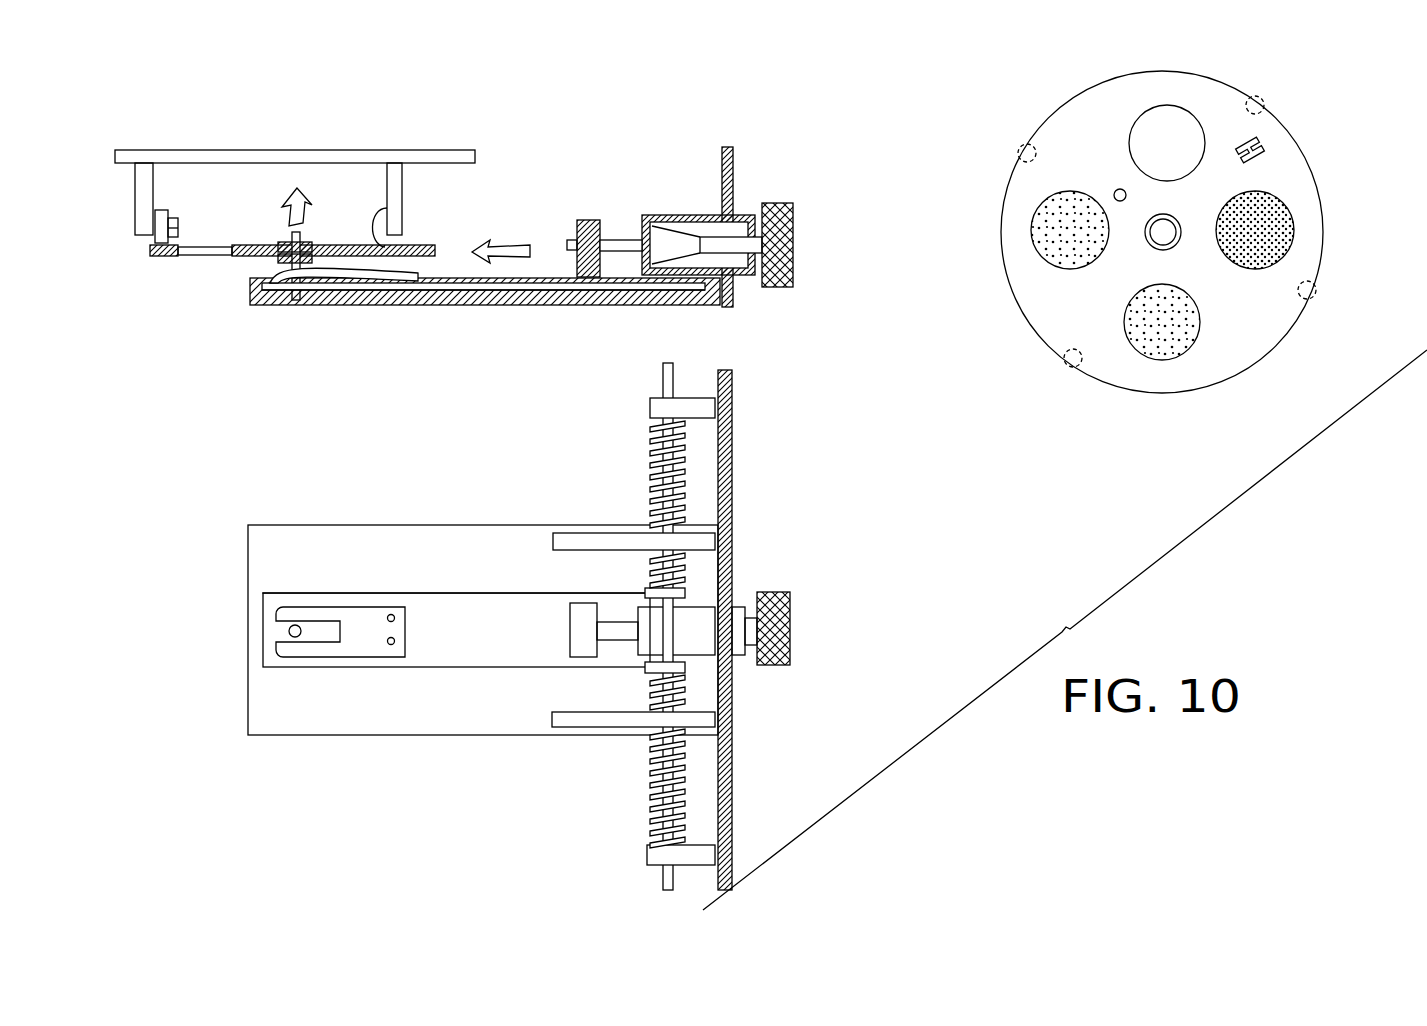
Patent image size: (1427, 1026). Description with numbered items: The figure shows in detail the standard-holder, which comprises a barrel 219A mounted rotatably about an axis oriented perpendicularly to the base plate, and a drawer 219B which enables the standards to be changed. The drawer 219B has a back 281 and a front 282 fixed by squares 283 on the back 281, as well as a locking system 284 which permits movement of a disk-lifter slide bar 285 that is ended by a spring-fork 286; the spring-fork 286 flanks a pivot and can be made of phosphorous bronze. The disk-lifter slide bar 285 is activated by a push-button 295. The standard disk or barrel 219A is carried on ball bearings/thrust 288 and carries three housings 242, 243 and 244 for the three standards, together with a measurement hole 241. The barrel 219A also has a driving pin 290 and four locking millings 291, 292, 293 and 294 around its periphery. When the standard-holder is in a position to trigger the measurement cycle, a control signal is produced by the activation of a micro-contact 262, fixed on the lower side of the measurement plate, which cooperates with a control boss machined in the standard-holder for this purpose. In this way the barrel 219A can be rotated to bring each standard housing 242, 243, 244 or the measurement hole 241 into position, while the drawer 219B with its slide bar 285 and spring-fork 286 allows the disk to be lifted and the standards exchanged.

The barrel 219A is at (172, 256).
The drawer 219B is at (240, 674).
The measurement hole 241 is at (1150, 128).
The housing 242 is at (1048, 243).
The housing 243 is at (1145, 345).
The housing 244 is at (1290, 228).
The micro-contact 262 is at (1270, 155).
The back 281 is at (330, 306).
The front 282 is at (734, 297).
The square 283 is at (590, 540).
The locking system 284 is at (645, 460).
The disk-lifter slide bar 285 is at (430, 668).
The spring-fork 286 is at (297, 652).
The ball bearings/thrust 288 is at (303, 243).
The driving pin 290 is at (1115, 190).
The locking milling 291 is at (1262, 110).
The locking milling 292 is at (1312, 292).
The locking milling 293 is at (1065, 363).
The locking milling 294 is at (1020, 152).
The push-button 295 is at (675, 203).